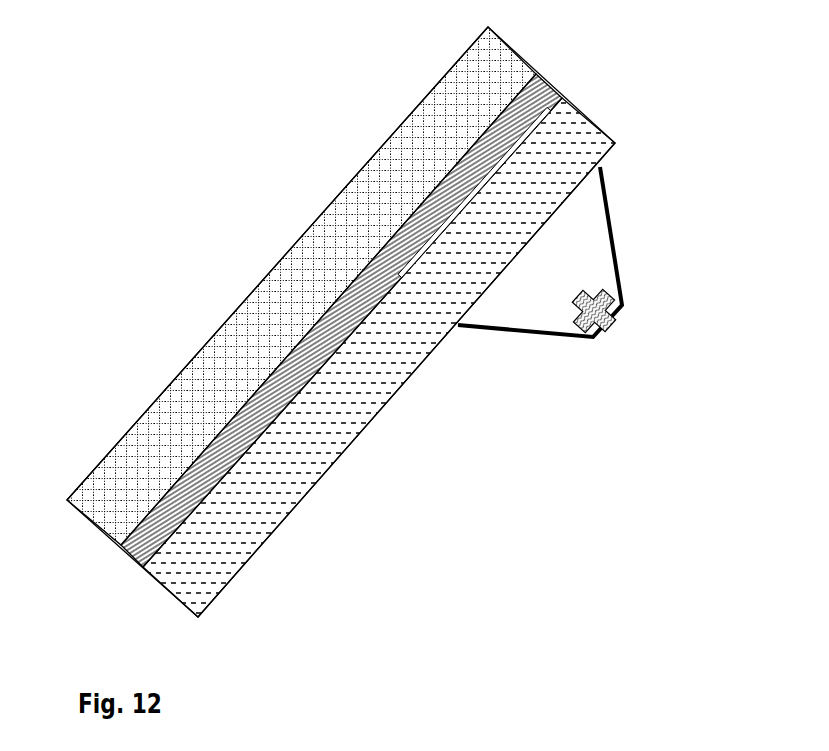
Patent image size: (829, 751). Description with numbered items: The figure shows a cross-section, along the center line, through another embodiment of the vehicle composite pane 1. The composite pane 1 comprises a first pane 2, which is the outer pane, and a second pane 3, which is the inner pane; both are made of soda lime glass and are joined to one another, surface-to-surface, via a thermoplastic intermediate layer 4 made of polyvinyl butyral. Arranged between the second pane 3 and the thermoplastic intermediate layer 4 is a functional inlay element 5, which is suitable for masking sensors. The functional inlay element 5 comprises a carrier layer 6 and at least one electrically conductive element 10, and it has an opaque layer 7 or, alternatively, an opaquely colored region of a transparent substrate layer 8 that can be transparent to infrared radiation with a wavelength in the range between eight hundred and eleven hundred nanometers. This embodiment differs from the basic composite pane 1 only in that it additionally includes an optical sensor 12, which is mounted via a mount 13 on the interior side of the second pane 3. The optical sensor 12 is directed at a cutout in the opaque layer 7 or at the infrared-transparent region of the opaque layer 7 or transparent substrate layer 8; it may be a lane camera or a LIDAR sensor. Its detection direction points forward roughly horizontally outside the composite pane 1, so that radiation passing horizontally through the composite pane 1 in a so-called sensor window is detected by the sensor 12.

The composite pane 1 is at (178, 173).
The first pane 2 is at (382, 187).
The second pane 3 is at (593, 150).
The thermoplastic intermediate layer 4 is at (145, 538).
The functional inlay element 5 is at (525, 269).
The carrier layer 6 is at (474, 192).
The opaque layer 7 is at (474, 192).
The transparent substrate layer 8 is at (474, 192).
The electrically conductive element 10 is at (442, 220).
The sensor 12 is at (603, 327).
The mount 13 is at (613, 253).